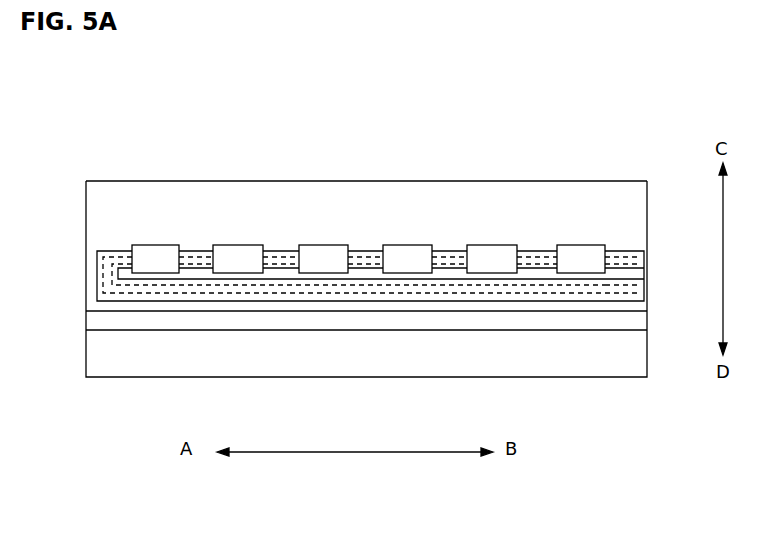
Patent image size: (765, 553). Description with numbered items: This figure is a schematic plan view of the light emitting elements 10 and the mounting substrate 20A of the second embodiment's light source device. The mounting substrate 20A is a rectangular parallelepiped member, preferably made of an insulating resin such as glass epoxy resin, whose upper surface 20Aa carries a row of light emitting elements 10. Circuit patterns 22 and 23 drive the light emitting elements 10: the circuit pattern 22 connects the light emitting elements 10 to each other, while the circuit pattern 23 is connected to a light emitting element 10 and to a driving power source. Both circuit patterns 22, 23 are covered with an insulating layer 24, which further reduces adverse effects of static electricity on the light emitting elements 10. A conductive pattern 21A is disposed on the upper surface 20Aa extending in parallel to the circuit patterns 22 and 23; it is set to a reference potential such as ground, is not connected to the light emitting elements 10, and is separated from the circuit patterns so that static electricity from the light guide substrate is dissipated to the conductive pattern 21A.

The light emitting element 10 is at (330, 245).
The mounting substrate 20A is at (363, 181).
The upper surface 20Aa is at (160, 193).
The conductive pattern 21A is at (115, 322).
The circuit pattern 22 is at (197, 254).
The circuit pattern 23 is at (637, 262).
The insulating layer 24 is at (540, 252).